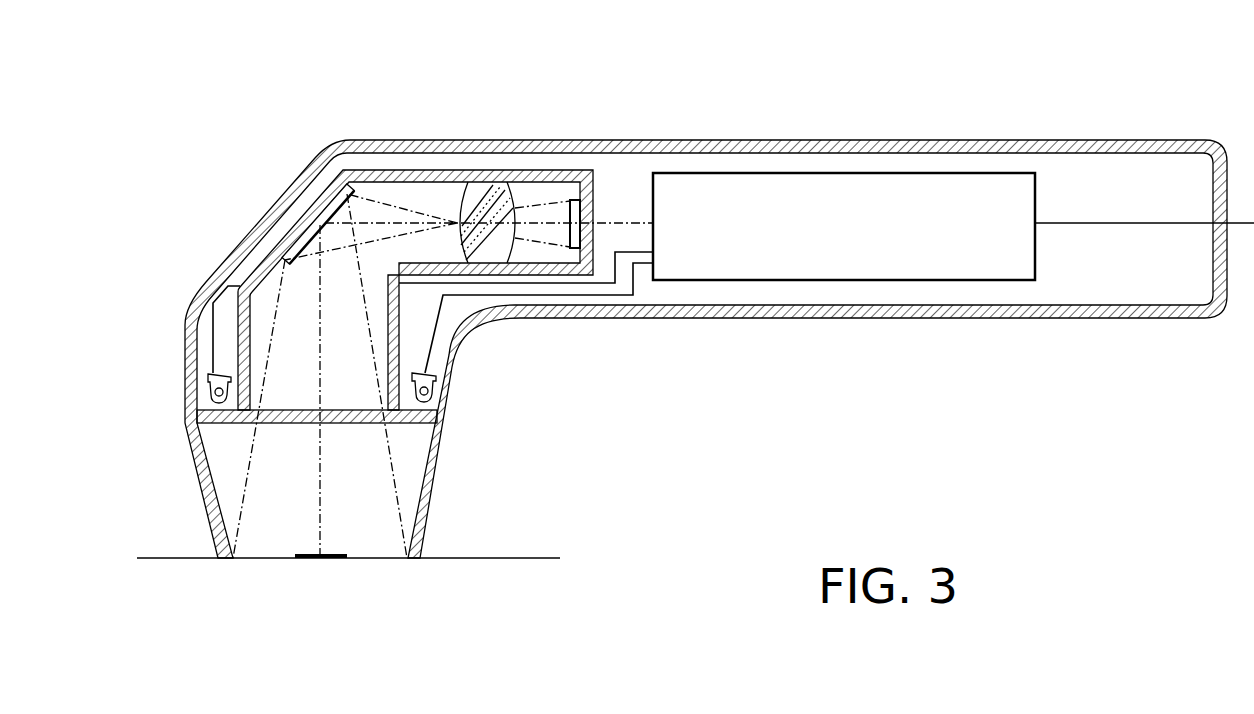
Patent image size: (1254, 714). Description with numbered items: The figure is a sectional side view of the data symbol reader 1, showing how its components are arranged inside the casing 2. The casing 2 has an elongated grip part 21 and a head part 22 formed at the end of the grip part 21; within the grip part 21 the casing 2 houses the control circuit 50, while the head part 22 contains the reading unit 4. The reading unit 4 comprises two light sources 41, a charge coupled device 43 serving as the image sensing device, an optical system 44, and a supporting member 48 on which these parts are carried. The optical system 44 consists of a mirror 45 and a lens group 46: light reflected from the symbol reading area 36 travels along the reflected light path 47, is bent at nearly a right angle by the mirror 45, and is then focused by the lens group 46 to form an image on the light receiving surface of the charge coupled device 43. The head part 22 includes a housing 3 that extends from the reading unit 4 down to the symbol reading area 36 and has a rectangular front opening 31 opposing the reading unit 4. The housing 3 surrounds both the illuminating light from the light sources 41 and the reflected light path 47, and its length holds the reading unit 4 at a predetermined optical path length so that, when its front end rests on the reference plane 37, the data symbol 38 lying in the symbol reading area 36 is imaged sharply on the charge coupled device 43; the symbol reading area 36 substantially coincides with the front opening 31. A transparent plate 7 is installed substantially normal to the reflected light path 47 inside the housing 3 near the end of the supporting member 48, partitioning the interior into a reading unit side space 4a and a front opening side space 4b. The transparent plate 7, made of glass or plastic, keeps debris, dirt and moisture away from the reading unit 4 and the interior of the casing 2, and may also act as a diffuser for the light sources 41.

The data symbol reader 1 is at (912, 62).
The casing 2 is at (999, 138).
The housing 3 is at (437, 495).
The reading unit 4 is at (294, 206).
The reading unit side space 4a is at (225, 469).
The front opening side space 4b is at (288, 348).
The transparent plate 7 is at (304, 427).
The grip part 21 is at (993, 318).
The head part 22 is at (320, 156).
The front opening 31 is at (385, 562).
The symbol reading area 36 is at (250, 562).
The reference plane 37 is at (525, 556).
The data symbol 38 is at (300, 553).
The light source 41 is at (210, 388).
The charge coupled device (CCD) 43 is at (577, 196).
The optical system 44 is at (489, 178).
The mirror 45 is at (262, 247).
The lens group 46 is at (458, 185).
The reflected light path 47 is at (324, 496).
The supporting member 48 is at (350, 172).
The control circuit 50 is at (803, 195).